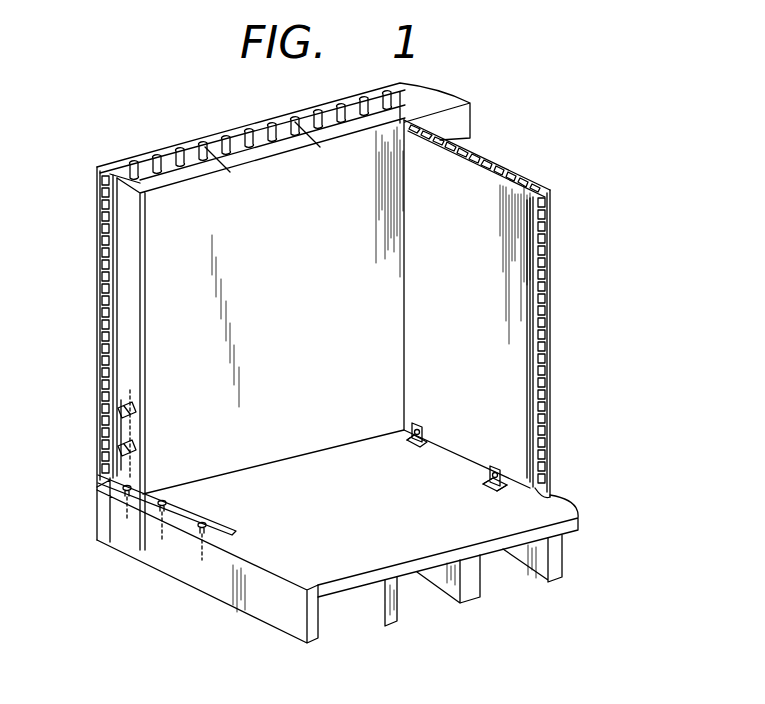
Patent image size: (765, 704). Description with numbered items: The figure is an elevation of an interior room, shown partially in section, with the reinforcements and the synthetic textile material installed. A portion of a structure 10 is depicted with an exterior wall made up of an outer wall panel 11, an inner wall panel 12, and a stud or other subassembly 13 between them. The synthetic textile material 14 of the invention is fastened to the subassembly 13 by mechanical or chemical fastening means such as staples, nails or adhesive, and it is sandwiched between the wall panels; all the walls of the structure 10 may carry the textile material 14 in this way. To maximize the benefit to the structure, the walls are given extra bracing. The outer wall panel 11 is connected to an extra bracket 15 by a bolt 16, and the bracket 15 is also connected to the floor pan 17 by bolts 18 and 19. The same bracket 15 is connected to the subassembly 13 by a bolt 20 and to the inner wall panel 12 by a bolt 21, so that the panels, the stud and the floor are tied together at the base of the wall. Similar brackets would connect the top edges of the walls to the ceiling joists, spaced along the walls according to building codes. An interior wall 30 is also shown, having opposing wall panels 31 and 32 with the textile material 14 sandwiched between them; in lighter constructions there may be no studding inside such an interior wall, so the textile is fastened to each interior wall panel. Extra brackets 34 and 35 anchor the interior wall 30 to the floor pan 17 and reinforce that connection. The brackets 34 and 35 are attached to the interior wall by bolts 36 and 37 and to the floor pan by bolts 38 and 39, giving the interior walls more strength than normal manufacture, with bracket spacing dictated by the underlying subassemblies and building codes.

The structure 10 is at (517, 590).
The outer wall panel 11 is at (98, 185).
The inner wall panel 12 is at (280, 478).
The stud or other subassembly 13 is at (218, 150).
The synthetic textile material 14 is at (102, 335).
The bracket 15 is at (117, 437).
The bolt 16 is at (131, 403).
The floor pan 17 is at (260, 600).
The bolt 18 is at (163, 500).
The bolt 19 is at (198, 523).
The bolt 20 is at (125, 492).
The bolt 21 is at (133, 460).
The interior wall 30 is at (570, 367).
The wall panel 31 is at (517, 372).
The wall panel 32 is at (550, 200).
The bracket 34 is at (420, 453).
The bracket 35 is at (505, 488).
The bolt 36 is at (415, 423).
The bolt 37 is at (503, 467).
The bolt 38 is at (408, 442).
The bolt 39 is at (493, 487).